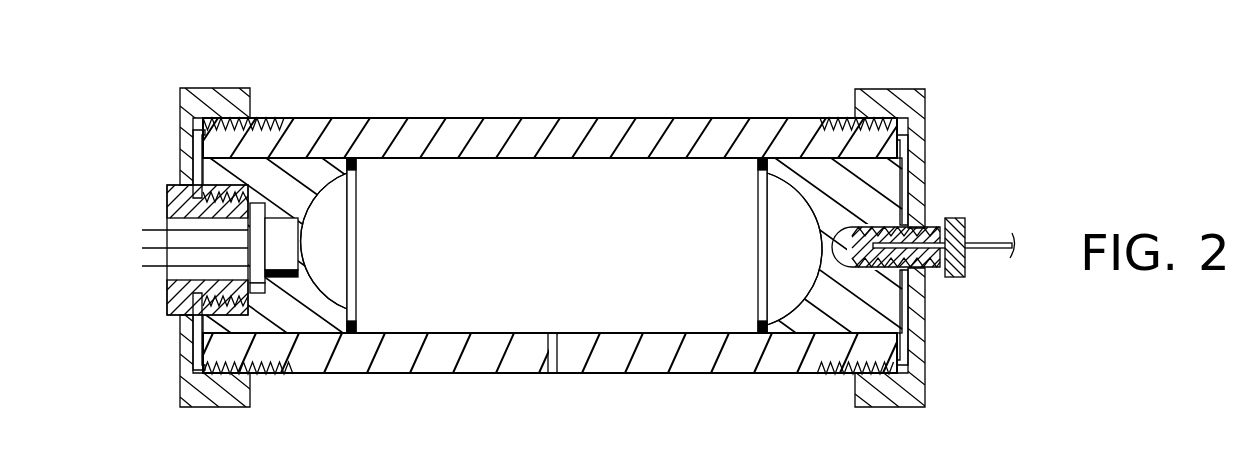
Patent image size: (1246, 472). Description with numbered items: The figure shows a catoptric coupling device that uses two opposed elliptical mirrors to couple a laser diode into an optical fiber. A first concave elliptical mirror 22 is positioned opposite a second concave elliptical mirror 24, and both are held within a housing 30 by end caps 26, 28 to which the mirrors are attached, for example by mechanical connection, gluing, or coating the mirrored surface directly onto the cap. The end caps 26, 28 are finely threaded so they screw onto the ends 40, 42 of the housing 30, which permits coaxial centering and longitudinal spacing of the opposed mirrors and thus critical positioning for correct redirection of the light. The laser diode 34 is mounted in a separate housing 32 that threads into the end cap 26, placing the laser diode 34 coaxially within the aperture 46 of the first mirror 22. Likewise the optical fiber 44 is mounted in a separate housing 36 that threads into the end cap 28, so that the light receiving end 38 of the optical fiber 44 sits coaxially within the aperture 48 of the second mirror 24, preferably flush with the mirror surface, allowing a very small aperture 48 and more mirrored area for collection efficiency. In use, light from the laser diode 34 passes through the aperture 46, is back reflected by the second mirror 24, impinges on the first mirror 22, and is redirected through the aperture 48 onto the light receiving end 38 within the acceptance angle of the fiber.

The first concave elliptical mirror 22 is at (317, 280).
The second concave elliptical mirror 24 is at (798, 297).
The end cap 26 is at (310, 322).
The end cap 28 is at (852, 321).
The housing 30 is at (528, 140).
The housing 32 is at (187, 292).
The laser diode 34 is at (278, 237).
The housing 36 is at (951, 215).
The light receiving end 38 is at (833, 247).
The end of the housing 40 is at (207, 140).
The end of the housing 42 is at (897, 138).
The optical fiber 44 is at (1008, 258).
The aperture 46 is at (302, 247).
The aperture 48 is at (820, 245).